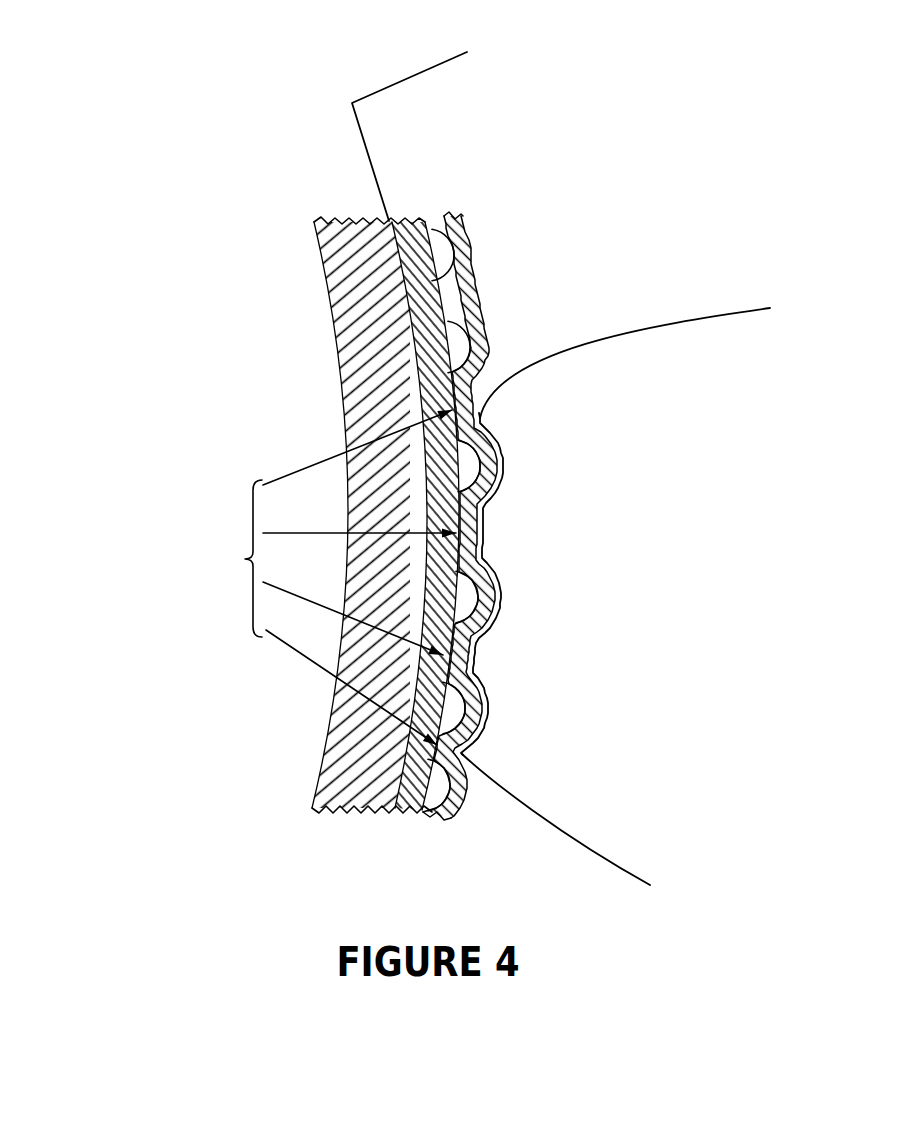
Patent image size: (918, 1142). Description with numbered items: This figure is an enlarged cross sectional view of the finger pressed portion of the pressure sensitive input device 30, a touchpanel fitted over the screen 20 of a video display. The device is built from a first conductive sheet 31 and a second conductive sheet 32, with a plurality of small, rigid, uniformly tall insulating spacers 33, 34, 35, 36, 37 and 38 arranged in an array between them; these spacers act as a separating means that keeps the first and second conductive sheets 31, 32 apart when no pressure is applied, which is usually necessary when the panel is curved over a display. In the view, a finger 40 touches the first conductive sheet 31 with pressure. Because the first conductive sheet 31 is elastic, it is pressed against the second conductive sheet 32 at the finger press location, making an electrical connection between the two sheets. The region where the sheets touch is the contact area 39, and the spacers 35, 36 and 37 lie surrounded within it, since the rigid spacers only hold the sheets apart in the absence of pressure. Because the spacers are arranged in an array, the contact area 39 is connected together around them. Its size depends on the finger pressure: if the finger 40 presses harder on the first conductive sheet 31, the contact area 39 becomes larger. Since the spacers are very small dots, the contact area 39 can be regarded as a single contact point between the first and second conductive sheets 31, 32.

The screen 20 is at (312, 228).
The pressure sensitive input device 30 is at (428, 69).
The first conductive sheet 31 is at (466, 219).
The second conductive sheet 32 is at (418, 222).
The insulating spacer 33 is at (434, 226).
The insulating spacer 34 is at (466, 322).
The insulating spacer 35 is at (474, 448).
The insulating spacer 36 is at (472, 580).
The insulating spacer 37 is at (462, 696).
The contact ball 38 is at (430, 812).
The contact area 39 is at (260, 577).
The finger 40 is at (710, 318).